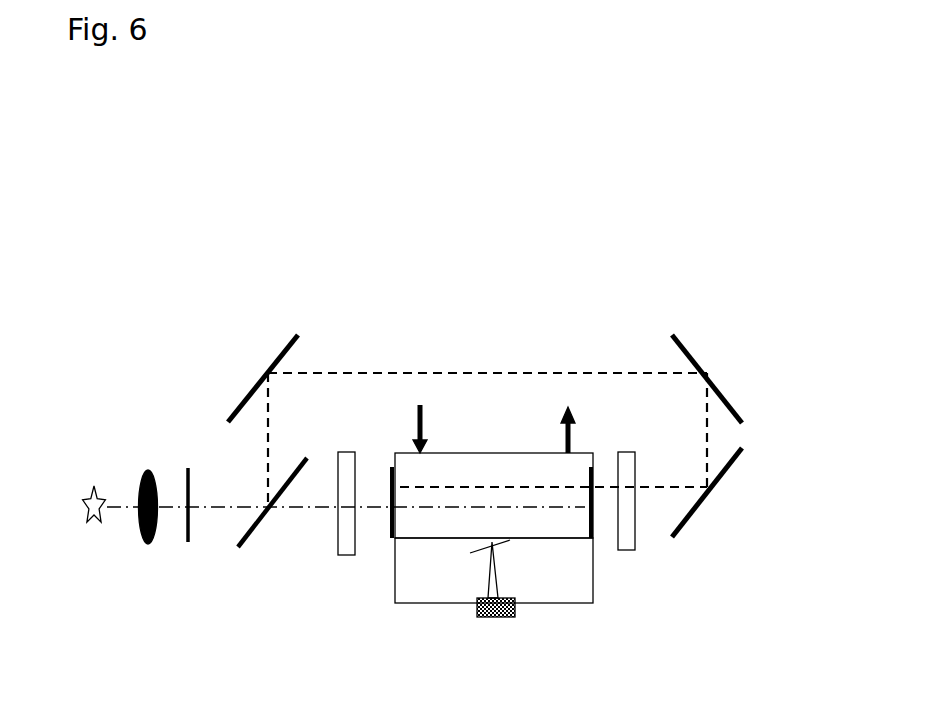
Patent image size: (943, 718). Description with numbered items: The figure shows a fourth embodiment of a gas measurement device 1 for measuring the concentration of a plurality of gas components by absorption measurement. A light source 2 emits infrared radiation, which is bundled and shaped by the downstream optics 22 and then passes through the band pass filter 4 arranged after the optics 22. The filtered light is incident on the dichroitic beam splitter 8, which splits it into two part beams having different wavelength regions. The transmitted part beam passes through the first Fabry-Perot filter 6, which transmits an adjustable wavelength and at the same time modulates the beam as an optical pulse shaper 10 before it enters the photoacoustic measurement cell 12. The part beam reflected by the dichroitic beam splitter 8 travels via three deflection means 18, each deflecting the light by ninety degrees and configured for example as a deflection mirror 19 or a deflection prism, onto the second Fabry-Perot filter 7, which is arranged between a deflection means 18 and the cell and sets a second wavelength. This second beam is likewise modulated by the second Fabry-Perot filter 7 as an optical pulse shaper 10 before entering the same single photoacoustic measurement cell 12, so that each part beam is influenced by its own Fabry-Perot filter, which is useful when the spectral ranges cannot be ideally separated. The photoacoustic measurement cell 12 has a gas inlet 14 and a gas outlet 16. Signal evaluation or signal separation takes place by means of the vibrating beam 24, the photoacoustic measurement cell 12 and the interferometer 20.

The gas measurement device 1 is at (492, 207).
The light source 2 is at (83, 502).
The band pass filter 4 is at (188, 542).
The first Fabry-Perot filter 6 is at (343, 555).
The second Fabry-Perot filter 7 is at (627, 552).
The dichroitic beam splitter 8 is at (260, 525).
The optical pulse shaper 10 is at (346, 597).
The photoacoustic measurement cell 12 is at (593, 582).
The gas inlet 14 is at (420, 412).
The gas outlet 16 is at (572, 425).
The deflection means 18 is at (252, 387).
The deflection mirror 19 is at (252, 325).
The interferometer 20 is at (495, 617).
The optics 22 is at (145, 470).
The vibrating beam 24 is at (508, 542).